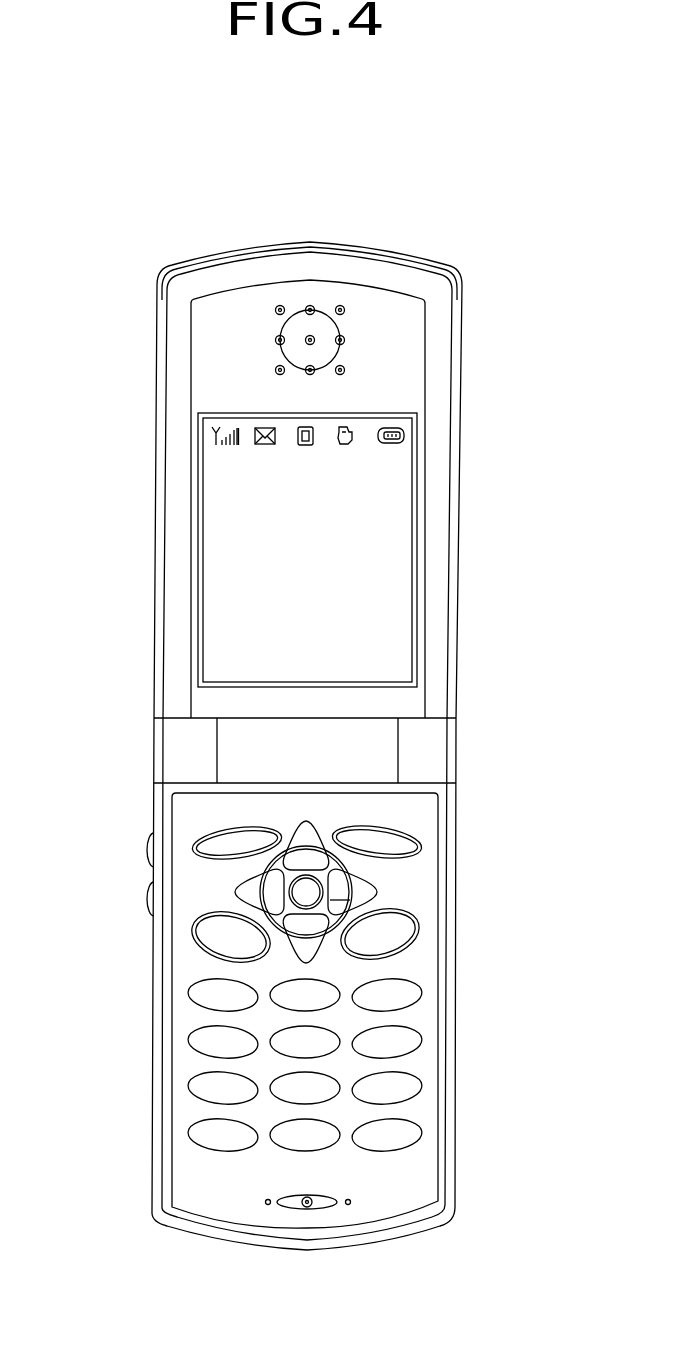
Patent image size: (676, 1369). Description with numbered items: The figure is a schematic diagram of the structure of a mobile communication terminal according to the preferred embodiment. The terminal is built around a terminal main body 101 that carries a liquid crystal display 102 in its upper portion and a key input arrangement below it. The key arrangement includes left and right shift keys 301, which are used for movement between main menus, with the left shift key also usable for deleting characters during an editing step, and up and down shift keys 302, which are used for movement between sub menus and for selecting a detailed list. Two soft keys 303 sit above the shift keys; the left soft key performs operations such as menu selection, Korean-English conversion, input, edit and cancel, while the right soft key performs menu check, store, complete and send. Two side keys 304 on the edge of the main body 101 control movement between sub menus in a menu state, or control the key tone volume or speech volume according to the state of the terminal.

The terminal main body 101 is at (457, 963).
The liquid crystal display 102 is at (397, 577).
The left and right shift keys 301 is at (278, 920).
The up and down shift keys 302 is at (308, 940).
The soft keys 303 is at (380, 842).
The side keys 304 is at (150, 898).